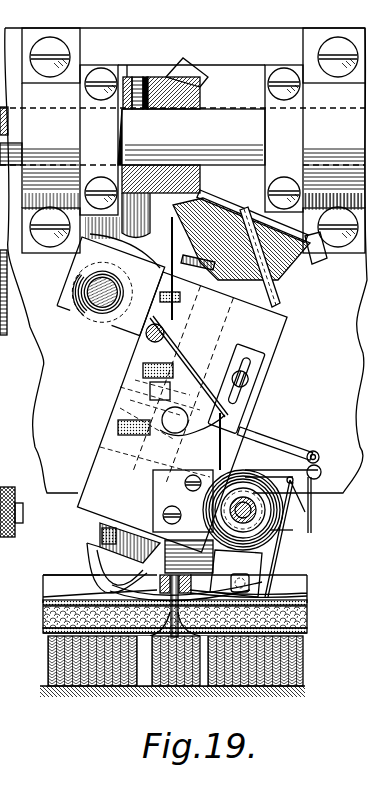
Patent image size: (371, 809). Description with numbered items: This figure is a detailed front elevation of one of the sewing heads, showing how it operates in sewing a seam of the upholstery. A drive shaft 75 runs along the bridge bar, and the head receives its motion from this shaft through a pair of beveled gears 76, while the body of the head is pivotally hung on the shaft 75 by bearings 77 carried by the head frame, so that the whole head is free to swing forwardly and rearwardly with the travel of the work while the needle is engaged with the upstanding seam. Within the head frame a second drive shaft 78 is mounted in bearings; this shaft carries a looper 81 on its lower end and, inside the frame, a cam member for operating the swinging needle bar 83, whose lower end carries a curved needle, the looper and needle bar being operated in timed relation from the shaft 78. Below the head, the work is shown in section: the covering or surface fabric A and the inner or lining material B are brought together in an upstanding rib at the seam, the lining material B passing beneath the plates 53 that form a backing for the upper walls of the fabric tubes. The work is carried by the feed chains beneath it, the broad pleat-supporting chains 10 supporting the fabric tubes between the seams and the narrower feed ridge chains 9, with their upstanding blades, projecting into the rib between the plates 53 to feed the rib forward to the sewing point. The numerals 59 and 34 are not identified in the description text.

The drive shaft 75 is at (191, 137).
The beveled gears 76 is at (186, 93).
The bearings 77 is at (191, 140).
The drive shaft 78 is at (226, 280).
The looper 81 is at (84, 548).
The swinging needle bar 83 is at (248, 562).
The plate 59 is at (55, 586).
The plates 53 is at (293, 583).
The covering or surface fabric A is at (307, 596).
The feed ridge chains 9 is at (177, 672).
The fabric layer 34 is at (67, 621).
The inner or lining material B is at (303, 628).
The feed pleat-supporting chains 10 is at (57, 670).